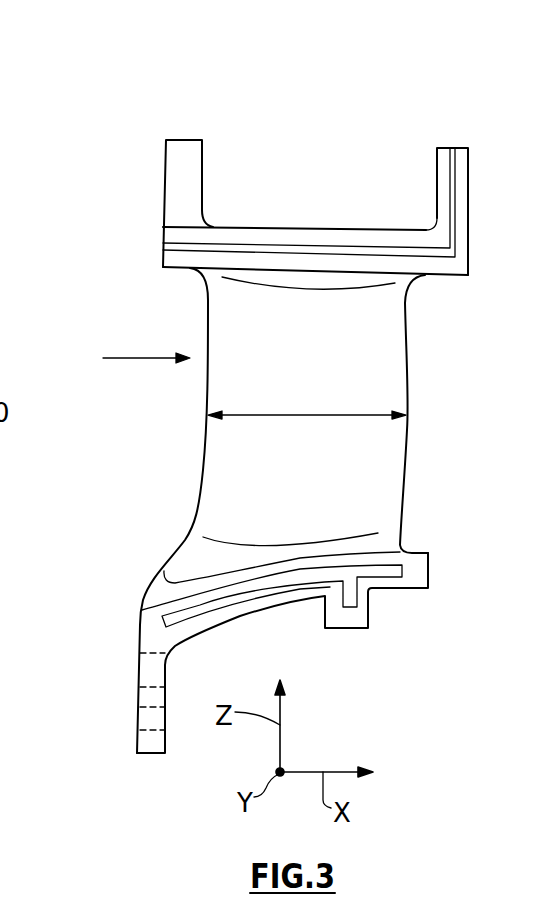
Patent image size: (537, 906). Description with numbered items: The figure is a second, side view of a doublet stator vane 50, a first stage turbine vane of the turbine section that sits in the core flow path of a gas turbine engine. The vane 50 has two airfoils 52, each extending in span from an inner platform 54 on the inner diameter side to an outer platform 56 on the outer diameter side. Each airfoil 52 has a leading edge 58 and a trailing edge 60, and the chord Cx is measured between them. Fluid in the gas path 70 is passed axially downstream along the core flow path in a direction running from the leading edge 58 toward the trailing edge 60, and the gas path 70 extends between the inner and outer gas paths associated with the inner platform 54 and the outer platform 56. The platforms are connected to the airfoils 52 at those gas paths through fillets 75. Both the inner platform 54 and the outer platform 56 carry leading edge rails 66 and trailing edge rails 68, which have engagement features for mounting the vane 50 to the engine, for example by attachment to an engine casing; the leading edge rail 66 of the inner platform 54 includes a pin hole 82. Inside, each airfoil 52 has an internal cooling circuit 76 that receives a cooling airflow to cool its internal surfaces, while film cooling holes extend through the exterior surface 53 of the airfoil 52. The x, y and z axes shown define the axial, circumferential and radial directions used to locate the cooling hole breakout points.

The doublet stator vane 50 is at (425, 105).
The airfoil 52 is at (306, 510).
The exterior surface 53 is at (383, 505).
The inner platform 54 is at (280, 598).
The outer platform 56 is at (226, 232).
The leading edge 58 is at (205, 452).
The trailing edge 60 is at (405, 437).
The leading edge rail 66 is at (190, 157).
The trailing edge rail 68 is at (438, 163).
The gas path 70 is at (135, 358).
The fillet 75 is at (233, 274).
The internal cooling circuit 76 is at (294, 210).
The pin hole 82 is at (137, 720).